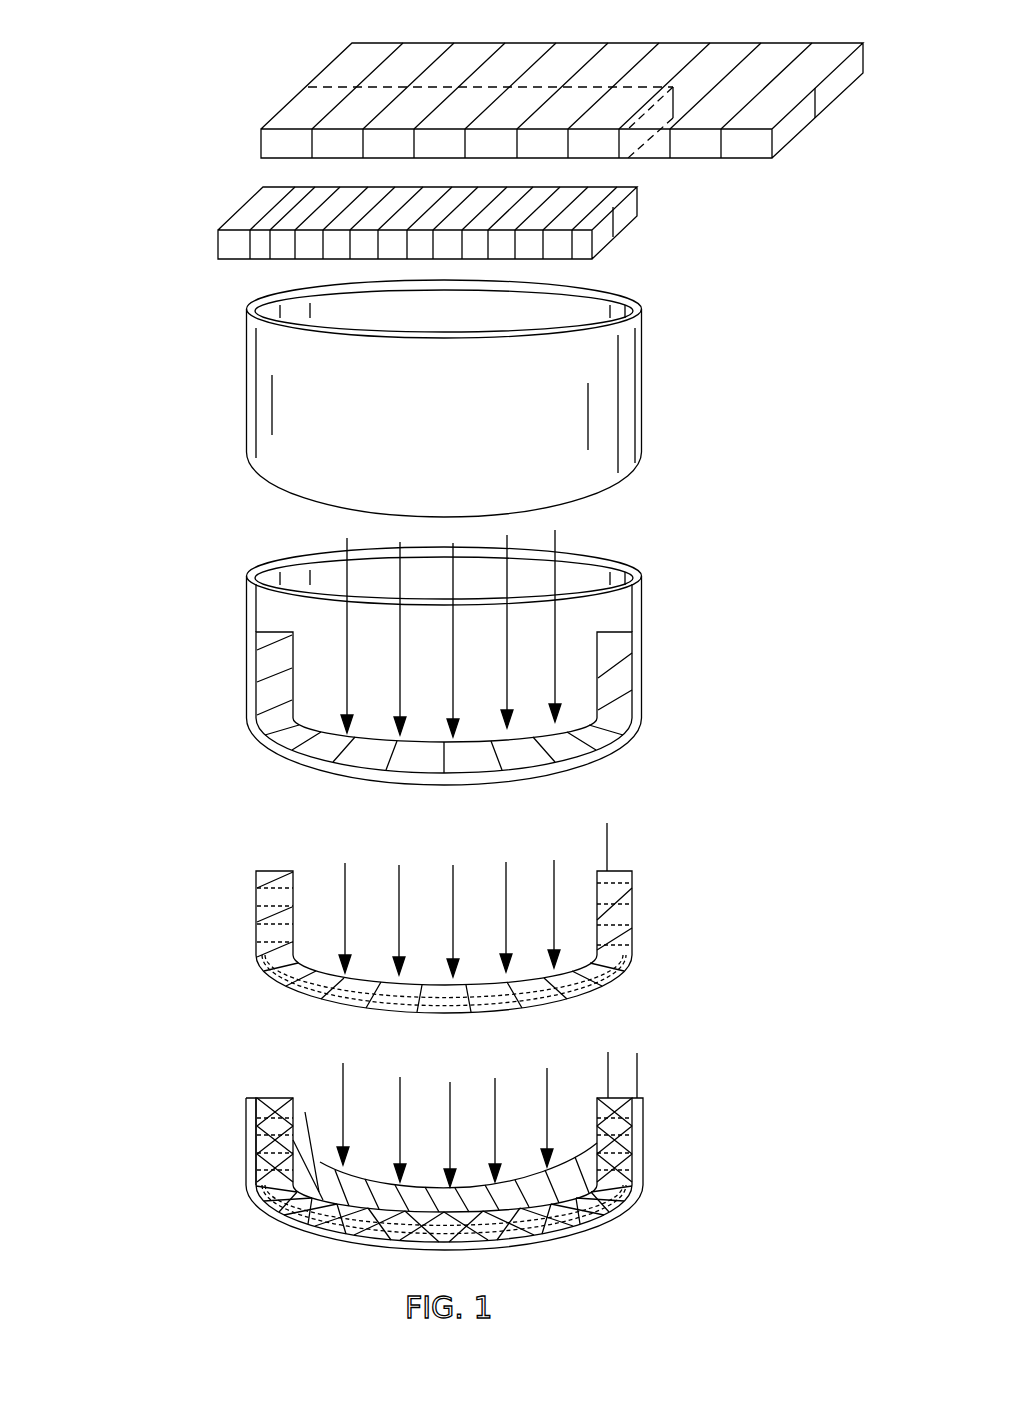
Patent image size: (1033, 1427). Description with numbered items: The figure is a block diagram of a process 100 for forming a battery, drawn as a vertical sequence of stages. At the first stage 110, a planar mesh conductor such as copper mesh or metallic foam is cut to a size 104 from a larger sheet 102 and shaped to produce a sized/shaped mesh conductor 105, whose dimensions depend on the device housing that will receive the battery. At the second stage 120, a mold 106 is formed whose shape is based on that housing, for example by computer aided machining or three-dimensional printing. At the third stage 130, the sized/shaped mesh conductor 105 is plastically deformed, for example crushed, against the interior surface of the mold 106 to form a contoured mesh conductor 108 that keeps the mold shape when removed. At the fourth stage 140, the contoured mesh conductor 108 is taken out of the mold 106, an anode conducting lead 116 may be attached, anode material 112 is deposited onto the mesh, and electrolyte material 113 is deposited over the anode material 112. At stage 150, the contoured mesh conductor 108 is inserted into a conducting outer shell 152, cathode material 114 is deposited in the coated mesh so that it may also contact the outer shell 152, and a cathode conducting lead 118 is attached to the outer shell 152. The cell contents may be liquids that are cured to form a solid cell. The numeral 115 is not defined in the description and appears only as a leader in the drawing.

The process 100 is at (882, 22).
The first stage 110 is at (138, 33).
The larger sheet 102 is at (337, 57).
The size 104 is at (280, 112).
The sized/shaped mesh conductor 105 is at (242, 208).
The mold 106 is at (247, 366).
The contoured mesh conductor 108 is at (258, 700).
The anode material 112 is at (272, 938).
The electrolyte material 113 is at (397, 875).
The cathode material 114 is at (293, 1100).
The upper surface of top layer 115 is at (320, 1162).
The anode conducting lead 116 is at (607, 847).
The cathode conducting lead 118 is at (637, 1072).
The second stage 120 is at (454, 321).
The third stage 130 is at (440, 587).
The fourth stage 140 is at (443, 894).
The stage 150 is at (445, 1092).
The conducting outer shell 152 is at (367, 1240).